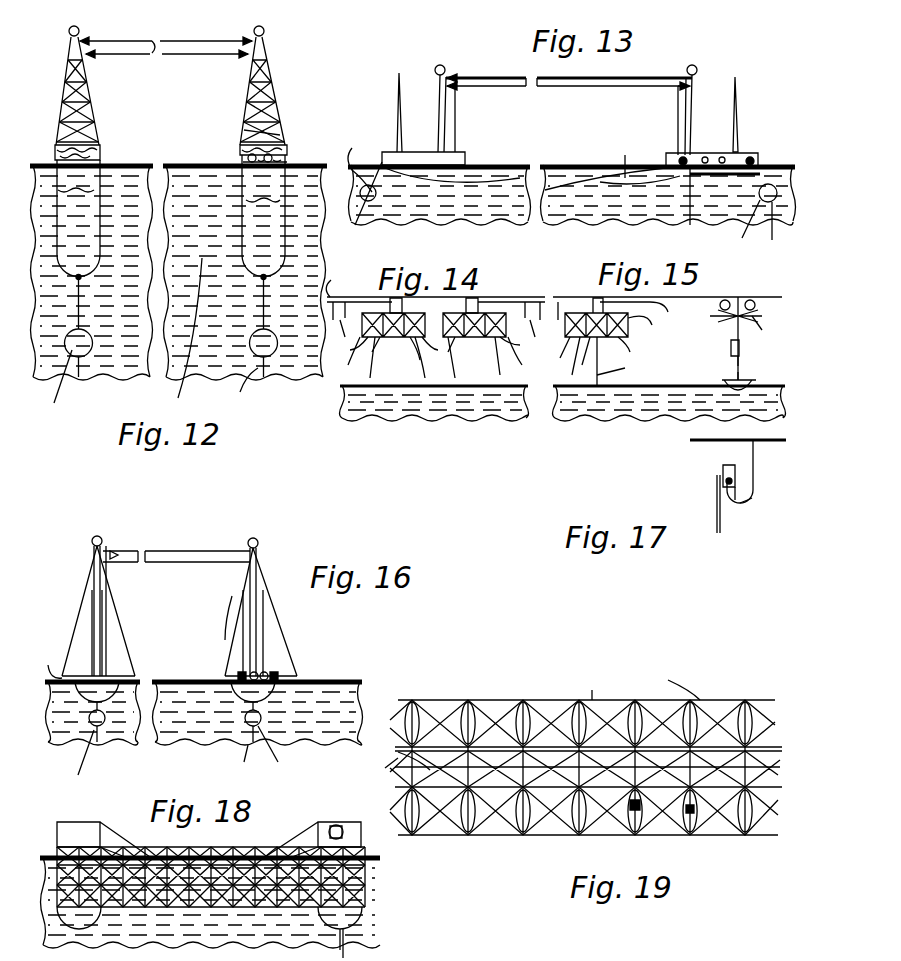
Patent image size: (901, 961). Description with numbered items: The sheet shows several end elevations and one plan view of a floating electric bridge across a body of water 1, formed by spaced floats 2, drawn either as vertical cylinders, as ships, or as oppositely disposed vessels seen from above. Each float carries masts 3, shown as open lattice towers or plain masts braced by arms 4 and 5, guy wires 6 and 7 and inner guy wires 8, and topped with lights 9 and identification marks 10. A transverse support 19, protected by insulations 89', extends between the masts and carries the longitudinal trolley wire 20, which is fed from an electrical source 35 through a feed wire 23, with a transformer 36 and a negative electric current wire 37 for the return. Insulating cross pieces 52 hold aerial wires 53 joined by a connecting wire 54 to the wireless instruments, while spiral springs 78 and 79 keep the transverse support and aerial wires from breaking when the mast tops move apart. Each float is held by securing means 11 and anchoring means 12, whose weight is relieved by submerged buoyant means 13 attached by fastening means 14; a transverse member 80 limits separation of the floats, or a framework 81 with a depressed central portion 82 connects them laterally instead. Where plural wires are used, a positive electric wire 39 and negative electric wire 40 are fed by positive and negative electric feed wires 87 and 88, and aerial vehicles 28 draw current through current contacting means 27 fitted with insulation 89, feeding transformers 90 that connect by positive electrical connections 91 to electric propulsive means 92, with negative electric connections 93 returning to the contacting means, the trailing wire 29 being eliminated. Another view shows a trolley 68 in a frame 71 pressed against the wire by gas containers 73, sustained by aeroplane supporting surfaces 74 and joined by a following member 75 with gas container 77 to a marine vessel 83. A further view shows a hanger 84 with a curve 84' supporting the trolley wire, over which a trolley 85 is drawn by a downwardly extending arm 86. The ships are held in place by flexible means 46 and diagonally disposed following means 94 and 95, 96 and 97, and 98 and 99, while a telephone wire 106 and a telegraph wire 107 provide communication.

In FIG. 12, the body of water 1 is at (312, 165).
In FIG. 13, the body of water 1 is at (598, 195).
In FIG. 14, the body of water 1 is at (395, 392).
In FIG. 15, the body of water 1 is at (666, 386).
In FIG. 16, the body of water 1 is at (178, 680).
In FIG. 18, the body of water 1 is at (212, 857).
In FIG. 19, the body of water 1 is at (587, 687).
In FIG. 12, the floats 2 is at (100, 147).
In FIG. 13, the floats 2 is at (465, 158).
In FIG. 16, the floats 2 is at (150, 660).
In FIG. 18, the floats 2 is at (103, 839).
In FIG. 19, the floats 2 is at (458, 882).
In FIG. 12, the masts 3 is at (280, 95).
In FIG. 13, the masts 3 is at (693, 138).
In FIG. 16, the masts 3 is at (258, 660).
In FIG. 19, the masts 3 is at (722, 732).
In FIG. 16, the arms 4 is at (88, 665).
In FIG. 16, the arms 5 is at (50, 660).
In FIG. 16, the guy wires 6 is at (78, 608).
In FIG. 16, the guy wires 7 is at (250, 650).
In FIG. 16, the inner guy wires 8 is at (232, 622).
In FIG. 12, the lights 9 is at (68, 34).
In FIG. 13, the lights 9 is at (441, 64).
In FIG. 16, the lights 9 is at (95, 535).
In FIG. 12, the identification marks 10 is at (265, 32).
In FIG. 13, the identification marks 10 is at (695, 64).
In FIG. 16, the identification marks 10 is at (258, 538).
In FIG. 12, the securing means 11 is at (264, 279).
In FIG. 14, the securing means 11 is at (340, 276).
In FIG. 16, the securing means 11 is at (235, 718).
In FIG. 12, the anchoring means 12 is at (270, 358).
In FIG. 13, the anchoring means 12 is at (776, 219).
In FIG. 16, the anchoring means 12 is at (277, 750).
In FIG. 18, the anchoring means 12 is at (355, 945).
In FIG. 12, the submerged buoyant means 13 is at (56, 381).
In FIG. 13, the submerged buoyant means 13 is at (557, 208).
In FIG. 16, the submerged buoyant means 13 is at (81, 738).
In FIG. 12, the fastening means 14 is at (84, 358).
In FIG. 12, the transverse support 19 is at (150, 62).
In FIG. 13, the transverse support 19 is at (667, 90).
In FIG. 14, the transverse support 19 is at (510, 297).
In FIG. 15, the transverse support 19 is at (570, 297).
In FIG. 17, the transverse support 19 is at (705, 442).
In FIG. 16, the transverse support 19 is at (155, 566).
In FIG. 19, the transverse support 19 is at (398, 762).
In FIG. 12, the trolley wire 20 is at (170, 66).
In FIG. 13, the trolley wire 20 is at (570, 98).
In FIG. 15, the trolley wire 20 is at (766, 280).
In FIG. 17, the trolley wire 20 is at (732, 504).
In FIG. 16, the trolley wire 20 is at (180, 570).
In FIG. 19, the trolley wire 20 is at (452, 790).
In FIG. 12, the feed wire 23 is at (244, 130).
In FIG. 13, the feed wire 23 is at (678, 140).
In FIG. 16, the feed wire 23 is at (232, 596).
In FIG. 14, the current contacting means 27 is at (397, 352).
In FIG. 15, the current contacting means 27 is at (612, 351).
In FIG. 14, the aerial vehicles 28 is at (433, 355).
In FIG. 15, the aerial vehicles 28 is at (557, 352).
In FIG. 15, the trailing wire 29 is at (627, 365).
In FIG. 12, the electrical source 35 is at (286, 155).
In FIG. 13, the electrical source 35 is at (722, 157).
In FIG. 16, the electrical source 35 is at (238, 674).
In FIG. 18, the electrical source 35 is at (332, 826).
In FIG. 19, the electrical source 35 is at (630, 800).
In FIG. 12, the transformer 36 is at (247, 157).
In FIG. 13, the transformer 36 is at (672, 160).
In FIG. 16, the transformer 36 is at (270, 676).
In FIG. 19, the transformer 36 is at (686, 810).
In FIG. 12, the negative electric current wire 37 is at (243, 387).
In FIG. 13, the negative electric current wire 37 is at (690, 210).
In FIG. 16, the negative electric current wire 37 is at (245, 736).
In FIG. 18, the negative electric current wire 37 is at (338, 935).
In FIG. 14, the positive electric wire 39 is at (437, 318).
In FIG. 14, the negative electric wire 40 is at (466, 304).
In FIG. 19, the flexible means 46 is at (607, 835).
In FIG. 12, the insulating cross pieces 52 is at (86, 42).
In FIG. 13, the insulating cross pieces 52 is at (452, 76).
In FIG. 16, the insulating cross pieces 52 is at (248, 540).
In FIG. 12, the aerial wires 53 is at (185, 40).
In FIG. 13, the aerial wires 53 is at (512, 76).
In FIG. 16, the aerial wires 53 is at (168, 548).
In FIG. 12, the connecting wire 54 is at (84, 82).
In FIG. 13, the connecting wire 54 is at (457, 120).
In FIG. 16, the connecting wire 54 is at (108, 650).
In FIG. 15, the trolley 68 is at (742, 322).
In FIG. 15, the frame 71 is at (726, 320).
In FIG. 15, the gas containers 73 is at (728, 298).
In FIG. 15, the aeroplane supporting surfaces 74 is at (770, 329).
In FIG. 15, the following member 75 is at (745, 364).
In FIG. 15, the gas container 77 is at (730, 354).
In FIG. 12, the spiral springs 78 is at (248, 58).
In FIG. 12, the spiral springs 79 is at (253, 40).
In FIG. 12, the transverse member 80 is at (183, 336).
In FIG. 13, the transverse member 80 is at (640, 158).
In FIG. 18, the framework 81 is at (125, 845).
In FIG. 18, the depressed central portion 82 is at (222, 857).
In FIG. 15, the marine vessel 83 is at (748, 384).
In FIG. 17, the hanger 84 is at (757, 471).
In FIG. 17, the curve 84' is at (764, 523).
In FIG. 17, the trolley 85 is at (722, 478).
In FIG. 17, the downwardly extending arm 86 is at (717, 510).
In FIG. 14, the positive electric feed wire 87 is at (439, 332).
In FIG. 14, the negative electric feed wire 88 is at (438, 314).
In FIG. 15, the negative electric feed wire 88 is at (549, 315).
In FIG. 14, the insulation 89 is at (445, 344).
In FIG. 15, the insulation 89 is at (596, 317).
In FIG. 14, the insulations 89' is at (385, 304).
In FIG. 14, the transformers 90 is at (454, 363).
In FIG. 15, the transformers 90 is at (609, 361).
In FIG. 14, the positive electrical connections 91 is at (474, 360).
In FIG. 15, the positive electrical connections 91 is at (633, 345).
In FIG. 14, the electric propulsive means 92 is at (415, 363).
In FIG. 15, the electric propulsive means 92 is at (587, 356).
In FIG. 14, the negative electric connections 93 is at (412, 349).
In FIG. 19, the diagonally disposed following means 94 is at (616, 700).
In FIG. 19, the diagonally disposed following means 95 is at (720, 700).
In FIG. 19, the diagonally disposed following means 96 is at (488, 787).
In FIG. 19, the diagonally disposed following means 97 is at (515, 760).
In FIG. 19, the diagonally disposed following means 98 is at (730, 820).
In FIG. 19, the diagonally disposed following means 99 is at (760, 820).
In FIG. 19, the telephone wire 106 is at (498, 745).
In FIG. 19, the telegraph wire 107 is at (438, 710).